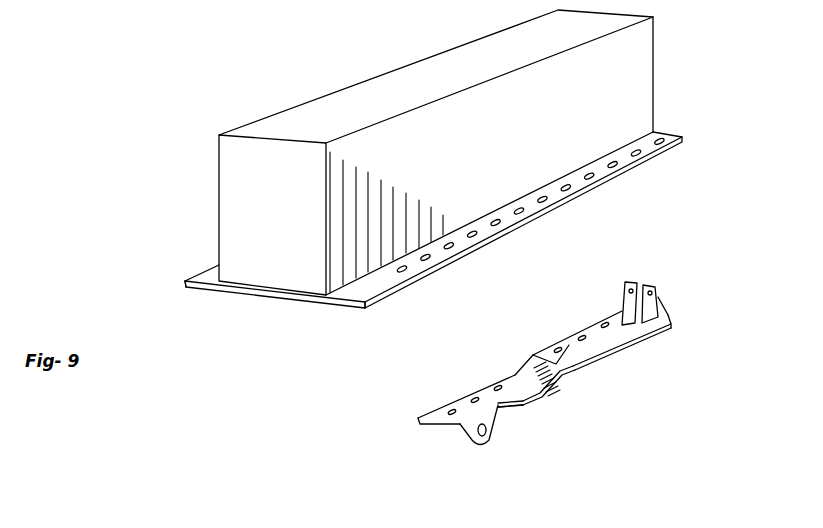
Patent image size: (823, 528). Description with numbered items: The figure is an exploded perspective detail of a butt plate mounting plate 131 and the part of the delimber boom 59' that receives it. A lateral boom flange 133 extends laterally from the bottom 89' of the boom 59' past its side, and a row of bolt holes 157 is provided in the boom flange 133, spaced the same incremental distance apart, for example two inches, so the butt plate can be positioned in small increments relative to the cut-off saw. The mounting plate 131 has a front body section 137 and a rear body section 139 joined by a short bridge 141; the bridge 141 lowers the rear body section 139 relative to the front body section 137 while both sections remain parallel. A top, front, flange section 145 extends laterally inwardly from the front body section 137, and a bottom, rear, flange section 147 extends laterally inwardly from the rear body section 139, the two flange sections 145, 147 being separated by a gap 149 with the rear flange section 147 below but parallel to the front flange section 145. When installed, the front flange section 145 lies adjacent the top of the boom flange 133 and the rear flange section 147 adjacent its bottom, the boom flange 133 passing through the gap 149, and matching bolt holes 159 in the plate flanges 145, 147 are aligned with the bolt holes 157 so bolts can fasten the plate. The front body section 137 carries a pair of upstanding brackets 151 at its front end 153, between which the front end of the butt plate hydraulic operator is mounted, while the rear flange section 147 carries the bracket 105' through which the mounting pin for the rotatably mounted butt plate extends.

The boom 59' is at (495, 150).
The bottom of the boom 89' is at (433, 261).
The lateral boom flange 133 is at (205, 285).
The bolt holes 157 is at (497, 223).
The mounting plate 131 is at (571, 400).
The rear body section 139 is at (527, 402).
The bracket 105' is at (515, 459).
The bottom, rear, flange section 147 is at (477, 397).
The bolt holes 159 is at (450, 411).
The gap 149 is at (509, 363).
The top, front, flange section 145 is at (562, 342).
The front body section 137 is at (633, 338).
The bridge 141 is at (567, 377).
The front end 153 is at (663, 318).
The upstanding brackets 151 is at (655, 285).